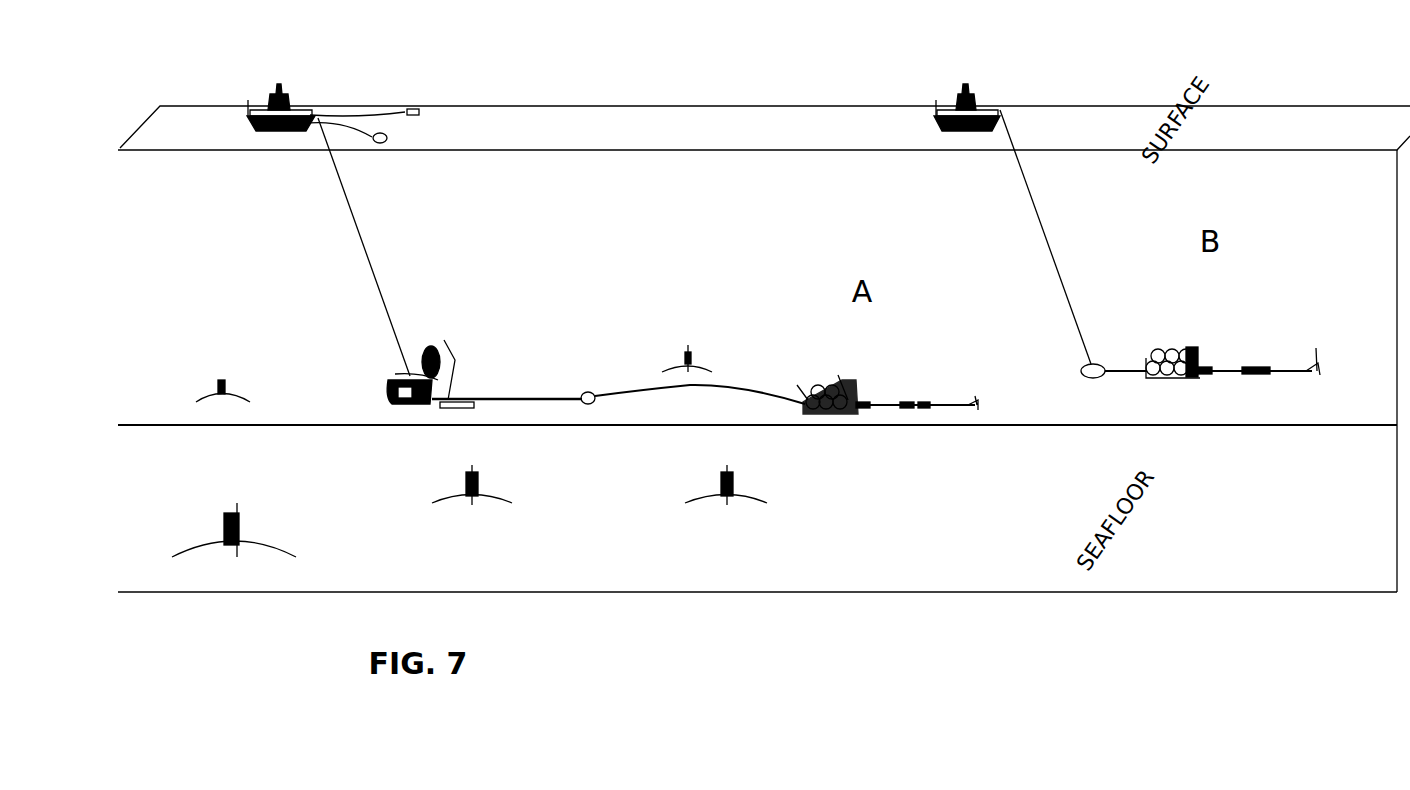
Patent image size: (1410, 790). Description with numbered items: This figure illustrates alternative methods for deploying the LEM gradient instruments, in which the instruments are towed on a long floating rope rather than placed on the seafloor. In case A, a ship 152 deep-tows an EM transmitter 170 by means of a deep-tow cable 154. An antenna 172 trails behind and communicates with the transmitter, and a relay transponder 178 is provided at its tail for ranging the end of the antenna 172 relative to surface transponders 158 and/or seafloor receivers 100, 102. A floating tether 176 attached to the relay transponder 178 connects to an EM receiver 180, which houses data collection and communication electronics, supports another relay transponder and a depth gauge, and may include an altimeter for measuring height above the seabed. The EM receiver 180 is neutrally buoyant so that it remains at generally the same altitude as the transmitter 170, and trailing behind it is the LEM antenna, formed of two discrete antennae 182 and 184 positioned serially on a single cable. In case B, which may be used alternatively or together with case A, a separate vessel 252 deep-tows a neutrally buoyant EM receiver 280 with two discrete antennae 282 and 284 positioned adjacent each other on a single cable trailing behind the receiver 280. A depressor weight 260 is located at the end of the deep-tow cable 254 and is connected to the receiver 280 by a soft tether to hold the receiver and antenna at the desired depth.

The seafloor receiver 100 is at (718, 488).
The seafloor receiver 102 is at (223, 385).
The ship 152 is at (272, 110).
The deep-tow cable 154 is at (351, 219).
The surface transponder 158 is at (384, 133).
The EM transmitter 170 is at (430, 350).
The antenna 172 is at (536, 396).
The floating tether 176 is at (733, 386).
The relay transponder 178 is at (591, 392).
The EM receiver 180 is at (832, 394).
The antenna 182 is at (893, 404).
The antenna 184 is at (950, 404).
The vessel 252 is at (965, 100).
The deep-tow cable 254 is at (1020, 180).
The depressor weight 260 is at (1090, 378).
The EM receiver 280 is at (1147, 362).
The antenna 282 is at (1220, 369).
The antenna 284 is at (1298, 369).